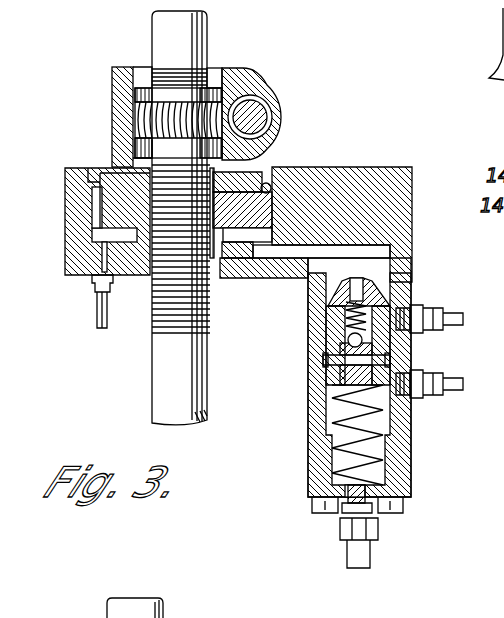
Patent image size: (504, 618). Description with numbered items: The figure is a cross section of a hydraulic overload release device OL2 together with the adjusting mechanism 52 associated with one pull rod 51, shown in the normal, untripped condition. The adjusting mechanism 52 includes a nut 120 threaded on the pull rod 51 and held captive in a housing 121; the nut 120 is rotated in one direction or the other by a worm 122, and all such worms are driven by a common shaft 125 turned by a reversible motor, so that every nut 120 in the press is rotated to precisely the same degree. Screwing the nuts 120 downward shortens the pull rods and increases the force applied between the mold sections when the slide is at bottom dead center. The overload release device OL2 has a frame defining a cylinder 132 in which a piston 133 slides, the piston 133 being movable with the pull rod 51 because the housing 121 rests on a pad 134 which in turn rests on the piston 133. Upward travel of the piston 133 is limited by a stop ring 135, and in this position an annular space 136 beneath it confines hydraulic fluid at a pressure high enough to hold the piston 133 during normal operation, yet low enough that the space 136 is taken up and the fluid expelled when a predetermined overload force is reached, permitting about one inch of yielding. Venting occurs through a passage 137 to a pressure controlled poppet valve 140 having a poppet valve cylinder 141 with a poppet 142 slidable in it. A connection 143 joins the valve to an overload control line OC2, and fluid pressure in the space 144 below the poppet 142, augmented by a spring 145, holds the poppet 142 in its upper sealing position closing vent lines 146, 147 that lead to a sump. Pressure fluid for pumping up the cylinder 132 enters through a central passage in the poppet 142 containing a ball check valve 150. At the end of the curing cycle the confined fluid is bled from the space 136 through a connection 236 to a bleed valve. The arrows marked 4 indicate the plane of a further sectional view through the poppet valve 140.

The pull rod 51 is at (160, 352).
The adjusting mechanism 52 is at (128, 56).
The nut 120 is at (243, 73).
The housing 121 is at (115, 90).
The worm 122 is at (264, 99).
The common shaft 125 is at (271, 120).
The oil line OL2 is at (293, 154).
The cylinder 132 is at (275, 242).
The piston 133 is at (263, 210).
The pad 134 is at (105, 172).
The stop ring 135 is at (276, 187).
The annular space 136 is at (93, 240).
The connection 236 is at (99, 312).
The passage 137 is at (299, 262).
The poppet valve 140 is at (305, 482).
The poppet valve cylinder 141 is at (310, 362).
The poppet 142 is at (328, 323).
The connection 143 is at (343, 540).
The space 144 is at (335, 423).
The spring 145 is at (405, 418).
The vent line 146 is at (455, 297).
The vent line 147 is at (460, 396).
The ball check valve 150 is at (362, 342).
The oil connection OC2 is at (362, 556).
The section line 4- 4 is at (340, 215).